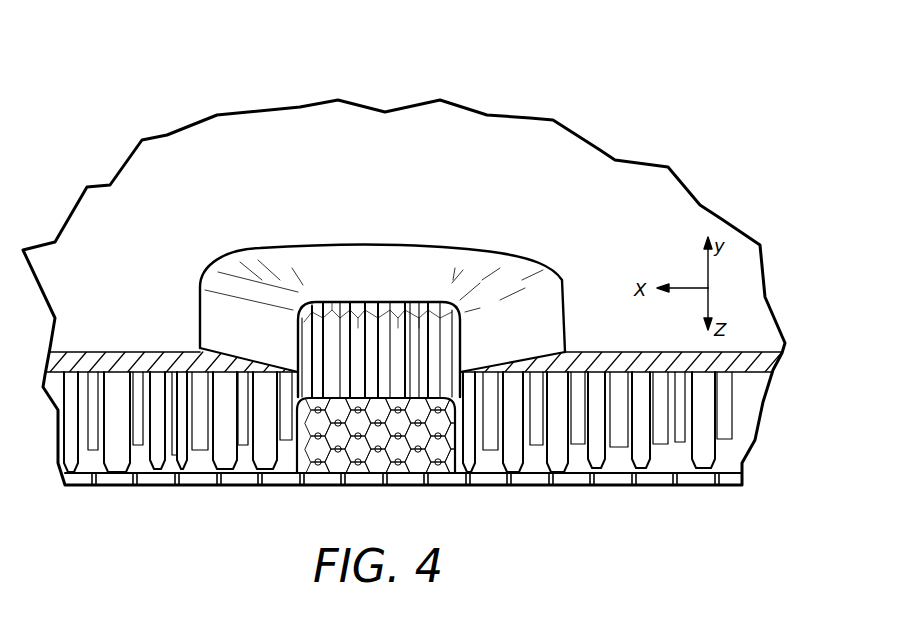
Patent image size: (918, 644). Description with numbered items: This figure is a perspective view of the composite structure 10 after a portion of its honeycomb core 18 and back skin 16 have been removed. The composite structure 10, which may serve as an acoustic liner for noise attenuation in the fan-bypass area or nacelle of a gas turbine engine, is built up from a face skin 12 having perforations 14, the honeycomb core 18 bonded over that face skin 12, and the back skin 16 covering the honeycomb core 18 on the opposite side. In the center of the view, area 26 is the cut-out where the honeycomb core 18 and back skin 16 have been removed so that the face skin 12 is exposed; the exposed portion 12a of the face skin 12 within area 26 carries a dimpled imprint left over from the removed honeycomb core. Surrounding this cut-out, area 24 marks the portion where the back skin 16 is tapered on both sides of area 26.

The composite structure 10 is at (640, 107).
The face skin 12 is at (790, 472).
The exposed portion of face skin 12a is at (365, 468).
The perforations 14 is at (423, 470).
The back skin 16 is at (141, 272).
The honeycomb core 18 is at (794, 412).
The area 24 is at (270, 282).
The area 26 is at (431, 396).